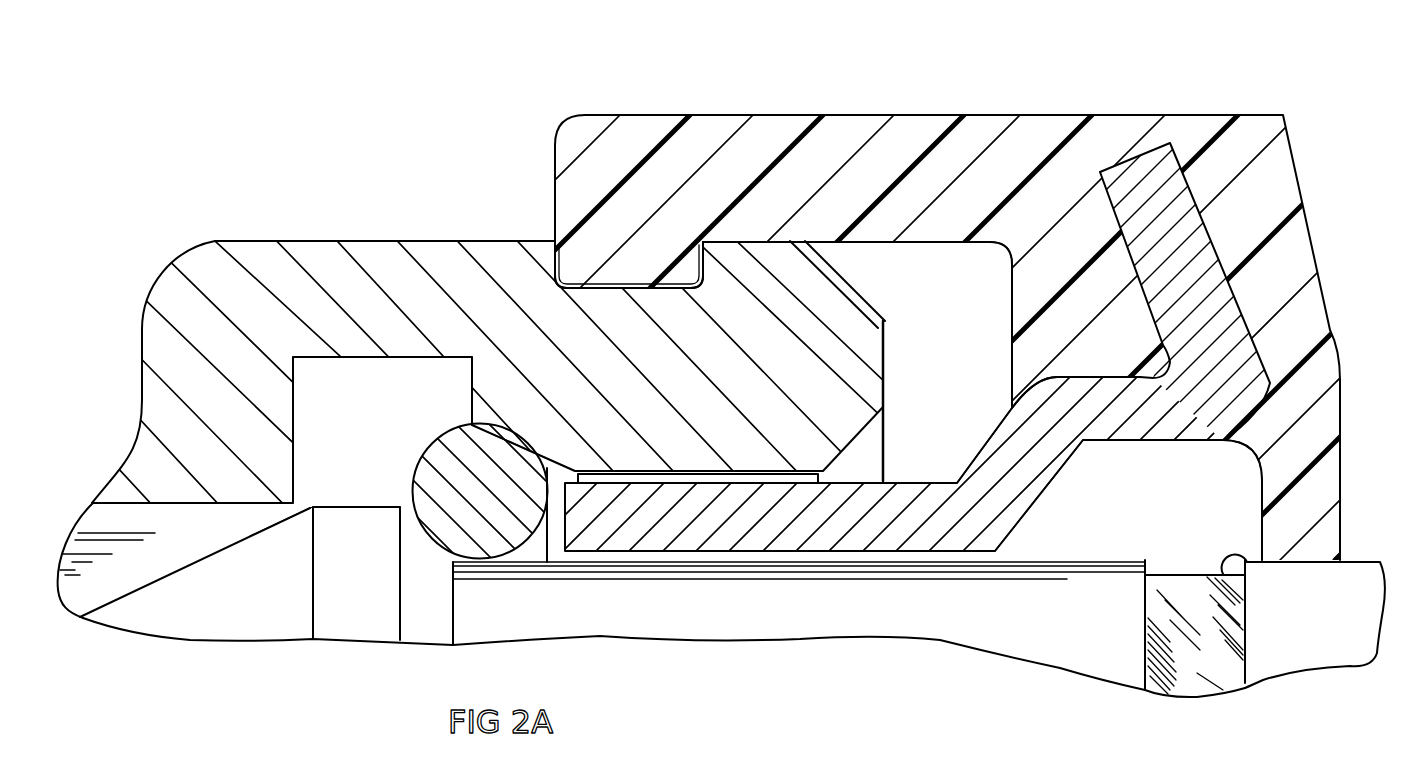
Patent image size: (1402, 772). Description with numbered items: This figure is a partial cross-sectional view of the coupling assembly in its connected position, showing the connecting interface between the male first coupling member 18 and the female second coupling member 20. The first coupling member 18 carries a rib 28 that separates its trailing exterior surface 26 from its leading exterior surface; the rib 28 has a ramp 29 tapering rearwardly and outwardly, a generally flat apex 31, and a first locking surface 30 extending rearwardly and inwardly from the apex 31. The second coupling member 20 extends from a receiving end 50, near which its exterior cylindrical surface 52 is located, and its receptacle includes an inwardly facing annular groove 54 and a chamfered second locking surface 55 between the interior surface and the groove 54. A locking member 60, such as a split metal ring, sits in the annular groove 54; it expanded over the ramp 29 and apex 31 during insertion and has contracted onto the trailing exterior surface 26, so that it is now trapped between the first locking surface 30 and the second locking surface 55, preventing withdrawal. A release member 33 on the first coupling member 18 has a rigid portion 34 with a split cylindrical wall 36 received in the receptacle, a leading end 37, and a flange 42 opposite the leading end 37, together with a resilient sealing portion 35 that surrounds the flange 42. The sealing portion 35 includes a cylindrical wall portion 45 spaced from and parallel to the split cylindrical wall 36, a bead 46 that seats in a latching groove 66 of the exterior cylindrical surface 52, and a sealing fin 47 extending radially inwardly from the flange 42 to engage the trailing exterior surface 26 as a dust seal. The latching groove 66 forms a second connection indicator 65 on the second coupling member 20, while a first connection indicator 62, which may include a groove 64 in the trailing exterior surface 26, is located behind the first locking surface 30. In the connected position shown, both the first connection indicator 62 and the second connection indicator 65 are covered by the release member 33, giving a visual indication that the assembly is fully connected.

The first coupling member 18 is at (306, 645).
The second coupling member 20 is at (391, 236).
The trailing exterior surface 26 is at (812, 625).
The rib 28 is at (347, 497).
The ramp 29 is at (118, 610).
The first locking surface 30 is at (412, 490).
The apex 31 is at (306, 500).
The release member 33 is at (774, 103).
The rigid portion 34 is at (1023, 520).
The sealing portion 35 is at (651, 123).
The split cylindrical wall 36 is at (650, 538).
The leading end 37 is at (562, 538).
The flange 42 is at (1165, 265).
The cylindrical wall portion 45 is at (857, 180).
The bead 46 is at (588, 270).
The sealing fin 47 is at (1253, 523).
The receiving end 50 is at (885, 331).
The exterior cylindrical surface 52 is at (491, 240).
The annular groove 54 is at (323, 365).
The second locking surface 55 is at (475, 415).
The locking member 60 is at (483, 553).
The first connection indicator 62 is at (1130, 635).
The groove 64 is at (1252, 566).
The second connection indicator 65 is at (713, 299).
The latching groove 66 is at (556, 185).